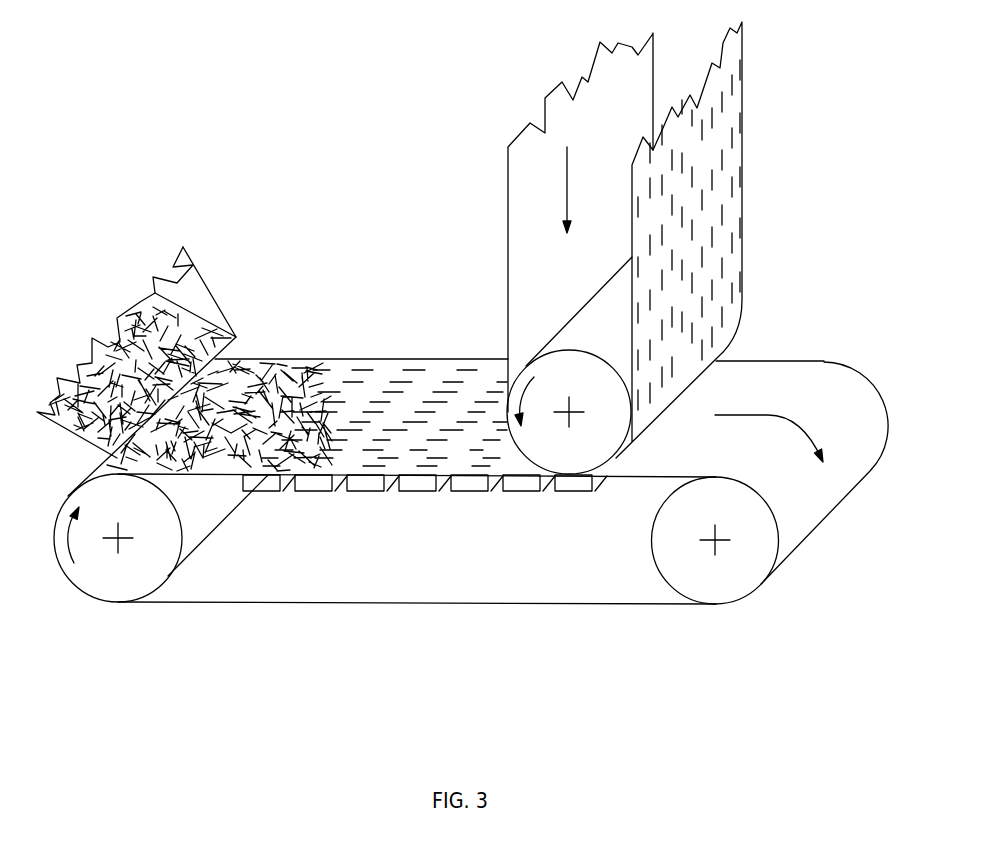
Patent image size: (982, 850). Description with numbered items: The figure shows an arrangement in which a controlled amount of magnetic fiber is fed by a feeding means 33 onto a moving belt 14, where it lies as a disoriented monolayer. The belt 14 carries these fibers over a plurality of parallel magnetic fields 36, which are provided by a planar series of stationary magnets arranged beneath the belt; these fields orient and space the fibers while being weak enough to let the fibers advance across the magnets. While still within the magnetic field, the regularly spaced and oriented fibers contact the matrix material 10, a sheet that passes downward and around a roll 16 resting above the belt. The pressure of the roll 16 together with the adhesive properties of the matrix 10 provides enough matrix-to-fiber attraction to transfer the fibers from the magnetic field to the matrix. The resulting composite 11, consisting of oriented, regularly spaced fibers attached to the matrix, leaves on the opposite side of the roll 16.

The matrix material 10 is at (507, 192).
The composite 11 is at (745, 185).
The belt 14 is at (226, 603).
The roll 16 is at (578, 342).
The feeding means 33 is at (212, 274).
The magnetic fields 36 is at (462, 497).